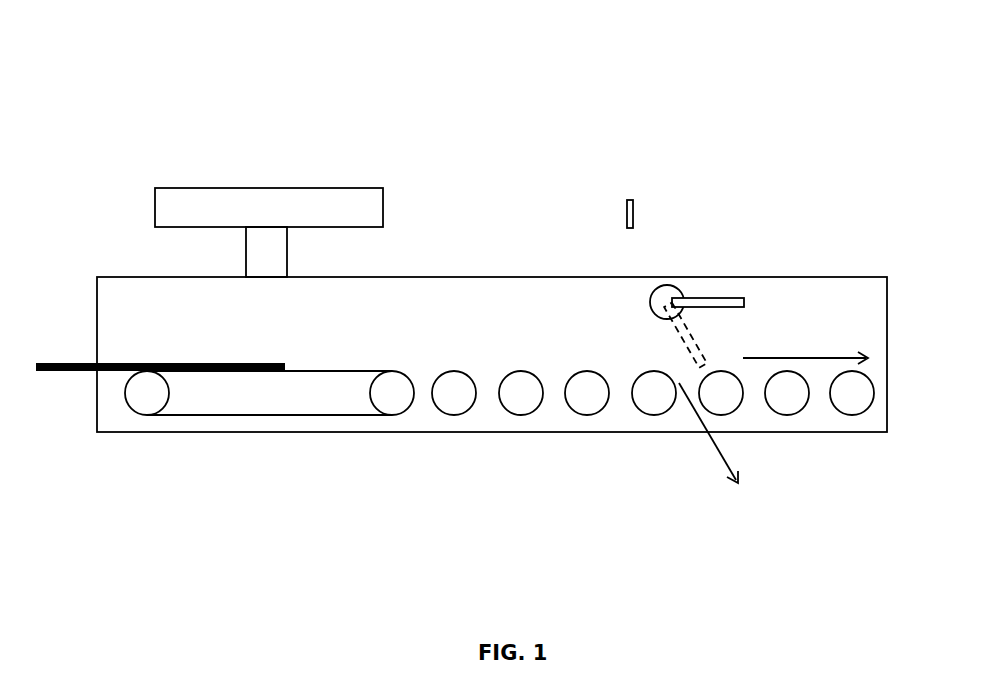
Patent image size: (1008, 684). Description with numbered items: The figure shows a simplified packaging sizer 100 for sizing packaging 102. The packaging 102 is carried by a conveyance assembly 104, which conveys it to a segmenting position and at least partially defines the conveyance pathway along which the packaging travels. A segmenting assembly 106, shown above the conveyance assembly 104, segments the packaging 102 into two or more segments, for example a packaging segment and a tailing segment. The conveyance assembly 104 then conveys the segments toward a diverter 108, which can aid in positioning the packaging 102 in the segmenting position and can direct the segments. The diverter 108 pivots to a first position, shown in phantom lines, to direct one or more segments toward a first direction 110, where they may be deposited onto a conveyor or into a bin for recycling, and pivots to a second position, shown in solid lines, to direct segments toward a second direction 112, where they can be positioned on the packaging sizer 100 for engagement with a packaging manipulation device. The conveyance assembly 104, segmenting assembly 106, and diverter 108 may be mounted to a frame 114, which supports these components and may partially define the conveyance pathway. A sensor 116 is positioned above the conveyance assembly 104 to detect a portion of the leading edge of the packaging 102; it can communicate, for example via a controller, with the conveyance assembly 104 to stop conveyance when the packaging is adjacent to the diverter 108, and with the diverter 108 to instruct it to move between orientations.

The packaging sizer 100 is at (84, 55).
The packaging 102 is at (68, 363).
The conveyance assembly 104 is at (125, 393).
The segmenting assembly 106 is at (155, 188).
The diverter 108 is at (727, 298).
The first direction 110 is at (712, 447).
The second direction 112 is at (832, 358).
The frame 114 is at (495, 277).
The sensor 116 is at (634, 212).